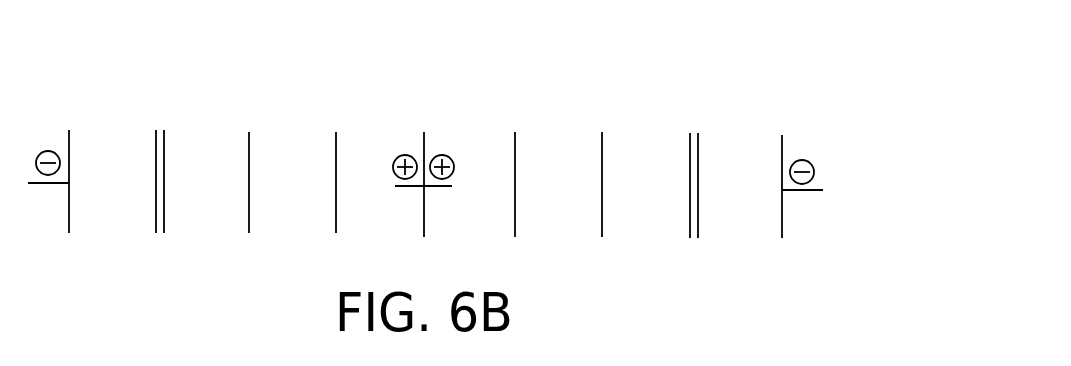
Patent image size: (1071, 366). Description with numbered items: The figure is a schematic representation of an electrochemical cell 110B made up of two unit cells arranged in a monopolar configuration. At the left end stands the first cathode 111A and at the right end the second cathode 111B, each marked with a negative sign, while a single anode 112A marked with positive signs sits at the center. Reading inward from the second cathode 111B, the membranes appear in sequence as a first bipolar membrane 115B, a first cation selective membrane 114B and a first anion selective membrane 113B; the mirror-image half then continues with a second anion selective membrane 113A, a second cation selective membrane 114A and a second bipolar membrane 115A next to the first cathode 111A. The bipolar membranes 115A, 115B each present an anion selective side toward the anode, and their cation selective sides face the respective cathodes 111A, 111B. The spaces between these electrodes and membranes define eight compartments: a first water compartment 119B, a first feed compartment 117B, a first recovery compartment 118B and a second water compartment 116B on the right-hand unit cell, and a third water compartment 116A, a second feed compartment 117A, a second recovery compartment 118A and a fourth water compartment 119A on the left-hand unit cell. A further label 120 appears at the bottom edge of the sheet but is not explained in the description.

The electrochemical cell 110B is at (751, 57).
The first cathode 111A is at (69, 147).
The second cathode 111B is at (782, 147).
The anode 112A is at (424, 148).
The second anion selective membrane 113A is at (336, 148).
The first anion selective membrane 113B is at (515, 148).
The second cation selective membrane 114A is at (249, 148).
The first cation selective membrane 114B is at (602, 148).
The second bipolar membrane 115A is at (165, 148).
The first bipolar membrane 115B is at (698, 145).
The third water compartment 116A is at (383, 223).
The second water compartment 116B is at (465, 227).
The second feed compartment 117A is at (288, 225).
The first feed compartment 117B is at (555, 228).
The second recovery compartment 118A is at (193, 225).
The first recovery compartment 118B is at (642, 228).
The fourth water compartment 119A is at (118, 222).
The first water compartment 119B is at (735, 227).
The electrode assembly 120 is at (730, 365).